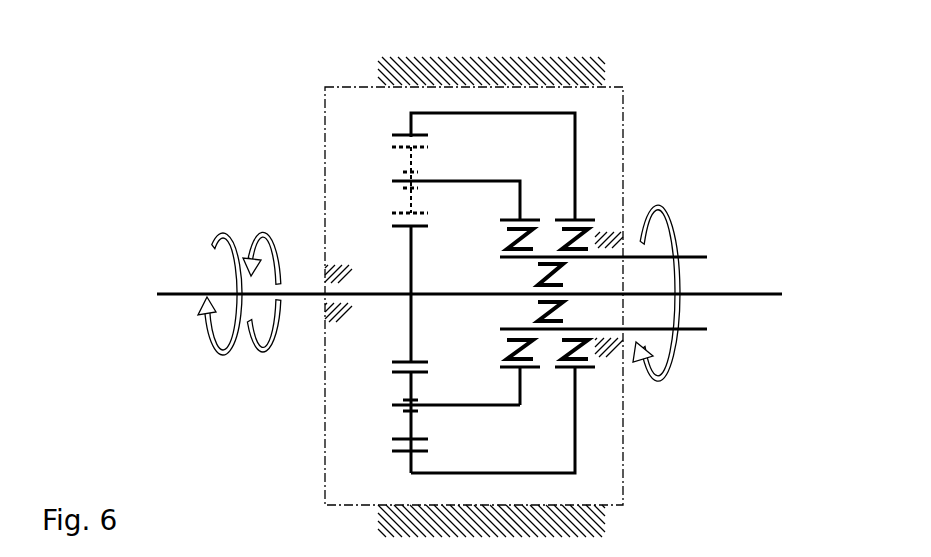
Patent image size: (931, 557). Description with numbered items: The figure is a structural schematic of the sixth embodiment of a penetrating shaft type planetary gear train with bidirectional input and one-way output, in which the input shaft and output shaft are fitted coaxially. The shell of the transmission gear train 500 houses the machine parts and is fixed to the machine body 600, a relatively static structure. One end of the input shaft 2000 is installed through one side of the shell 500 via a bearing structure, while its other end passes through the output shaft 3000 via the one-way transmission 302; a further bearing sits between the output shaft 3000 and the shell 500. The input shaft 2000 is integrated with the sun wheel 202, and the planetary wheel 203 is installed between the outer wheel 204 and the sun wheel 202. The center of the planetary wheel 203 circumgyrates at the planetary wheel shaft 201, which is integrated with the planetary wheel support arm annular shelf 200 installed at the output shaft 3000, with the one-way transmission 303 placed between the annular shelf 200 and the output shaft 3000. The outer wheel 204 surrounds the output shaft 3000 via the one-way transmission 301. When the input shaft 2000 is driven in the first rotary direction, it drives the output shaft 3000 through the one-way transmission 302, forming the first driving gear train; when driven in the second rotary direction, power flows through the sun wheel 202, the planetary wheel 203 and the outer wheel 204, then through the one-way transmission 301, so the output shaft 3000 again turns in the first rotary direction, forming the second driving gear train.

The machine body 600 is at (500, 76).
The shell of the transmission gear train 500 is at (325, 195).
The input shaft 2000 is at (188, 292).
The output shaft 3000 is at (692, 255).
The planetary wheel 203 is at (408, 160).
The sun wheel 202 is at (398, 224).
The planetary wheel shaft 201 is at (433, 407).
The planetary wheel support arm annular shelf 200 is at (525, 385).
The outer wheel 204 is at (390, 450).
The one-way transmission 301 is at (560, 227).
The one-way transmission 302 is at (550, 277).
The one-way transmission 303 is at (507, 358).